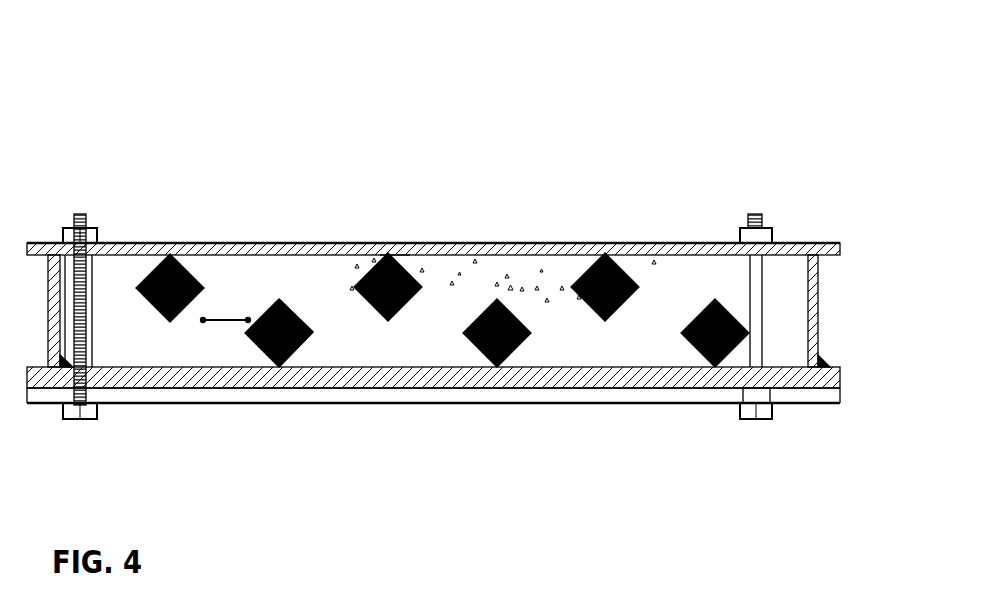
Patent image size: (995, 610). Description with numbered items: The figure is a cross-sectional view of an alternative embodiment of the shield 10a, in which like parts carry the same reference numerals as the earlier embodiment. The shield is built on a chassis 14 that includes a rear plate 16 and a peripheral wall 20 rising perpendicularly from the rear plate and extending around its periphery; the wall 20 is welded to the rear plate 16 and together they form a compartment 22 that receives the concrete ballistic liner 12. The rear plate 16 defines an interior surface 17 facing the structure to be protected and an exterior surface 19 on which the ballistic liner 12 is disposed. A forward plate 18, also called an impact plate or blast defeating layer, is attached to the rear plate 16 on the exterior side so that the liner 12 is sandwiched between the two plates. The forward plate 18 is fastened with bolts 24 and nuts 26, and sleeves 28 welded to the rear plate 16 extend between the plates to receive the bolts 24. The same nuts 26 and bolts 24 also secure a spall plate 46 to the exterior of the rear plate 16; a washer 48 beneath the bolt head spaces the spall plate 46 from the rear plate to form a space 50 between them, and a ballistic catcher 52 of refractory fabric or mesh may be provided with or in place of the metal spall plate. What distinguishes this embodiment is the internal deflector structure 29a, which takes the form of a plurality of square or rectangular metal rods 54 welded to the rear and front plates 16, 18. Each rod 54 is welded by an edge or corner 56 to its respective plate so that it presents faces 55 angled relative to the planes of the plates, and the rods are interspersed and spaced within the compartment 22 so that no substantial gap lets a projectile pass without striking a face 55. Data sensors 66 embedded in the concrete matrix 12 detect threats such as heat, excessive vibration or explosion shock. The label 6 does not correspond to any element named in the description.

The shield 10a is at (246, 116).
The concrete ballistic liner 12 is at (456, 276).
The chassis 14 is at (48, 384).
The rear plate 16 is at (275, 390).
The interior surface 17 is at (133, 390).
The forward plate 18 is at (269, 240).
The exterior surface 19 is at (645, 360).
The peripheral wall 20 is at (826, 329).
The compartment 22 is at (617, 346).
The bolt 24 is at (100, 279).
The nut 26 is at (96, 225).
The sleeve 28 is at (130, 243).
The internal deflector structure 29a is at (375, 252).
The spall plate 46 is at (437, 406).
The washer 48 is at (734, 402).
The space 50 is at (495, 393).
The ballistic catcher 52 is at (552, 405).
The rod 54 is at (288, 293).
The face 55 is at (304, 305).
The edge or corner 56 is at (393, 247).
The baffle edge 6 is at (318, 327).
The data sensor 66 is at (219, 328).